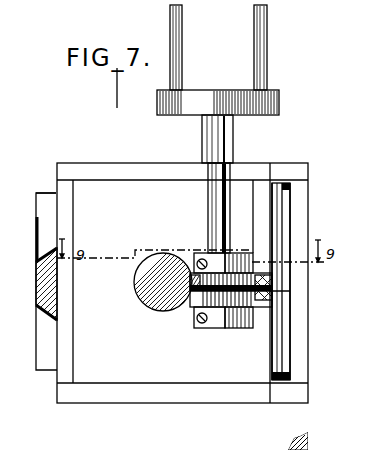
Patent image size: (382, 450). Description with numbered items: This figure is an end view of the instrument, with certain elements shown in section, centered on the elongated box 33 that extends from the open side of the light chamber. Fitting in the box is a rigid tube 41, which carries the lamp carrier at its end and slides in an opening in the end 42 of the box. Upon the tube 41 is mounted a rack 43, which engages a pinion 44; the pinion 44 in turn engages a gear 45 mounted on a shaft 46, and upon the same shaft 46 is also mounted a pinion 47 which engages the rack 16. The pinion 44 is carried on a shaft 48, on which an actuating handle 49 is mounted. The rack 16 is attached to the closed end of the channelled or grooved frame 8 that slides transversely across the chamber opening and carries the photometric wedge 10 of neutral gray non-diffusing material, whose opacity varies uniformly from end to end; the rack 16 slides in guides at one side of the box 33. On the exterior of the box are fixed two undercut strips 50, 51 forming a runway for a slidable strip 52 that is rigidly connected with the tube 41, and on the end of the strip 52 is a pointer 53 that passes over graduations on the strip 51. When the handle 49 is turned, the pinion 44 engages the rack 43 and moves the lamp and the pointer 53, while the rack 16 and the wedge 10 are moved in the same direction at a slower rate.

The channelled frame 8 is at (291, 193).
The photometric wedge 10 is at (284, 318).
The rack 16 is at (262, 290).
The elongated box 33 is at (152, 176).
The rigid tube 41 is at (150, 281).
The end of the box 42 is at (163, 282).
The rack 43 is at (193, 298).
The pinion 44 is at (232, 260).
The gear 45 is at (262, 318).
The shaft 46 is at (296, 251).
The pinion 47 is at (273, 276).
The shaft 48 is at (213, 197).
The actuating handle 49 is at (206, 93).
The undercut strip 50 is at (46, 331).
The undercut strip 51 is at (56, 199).
The slidable strip 52 is at (43, 296).
The pointer 53 is at (37, 251).